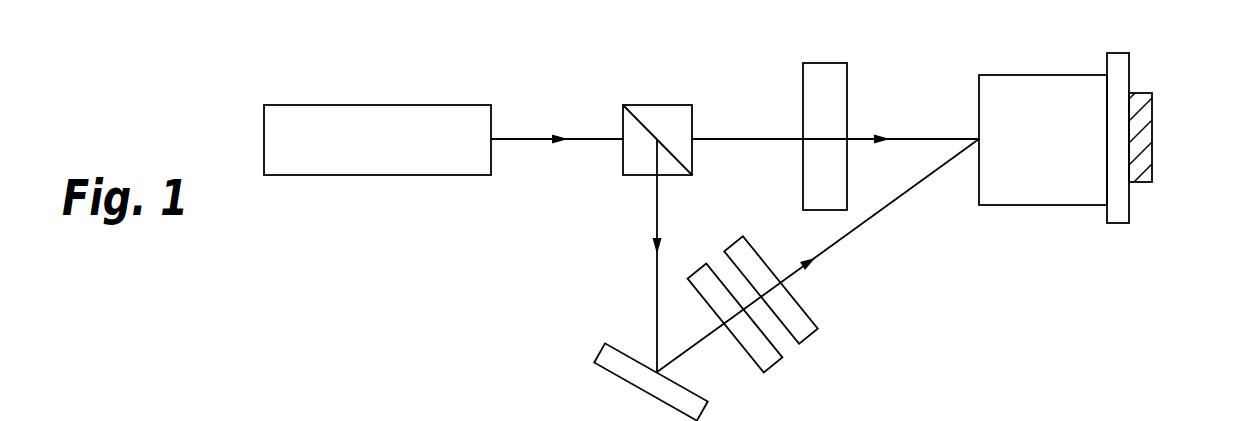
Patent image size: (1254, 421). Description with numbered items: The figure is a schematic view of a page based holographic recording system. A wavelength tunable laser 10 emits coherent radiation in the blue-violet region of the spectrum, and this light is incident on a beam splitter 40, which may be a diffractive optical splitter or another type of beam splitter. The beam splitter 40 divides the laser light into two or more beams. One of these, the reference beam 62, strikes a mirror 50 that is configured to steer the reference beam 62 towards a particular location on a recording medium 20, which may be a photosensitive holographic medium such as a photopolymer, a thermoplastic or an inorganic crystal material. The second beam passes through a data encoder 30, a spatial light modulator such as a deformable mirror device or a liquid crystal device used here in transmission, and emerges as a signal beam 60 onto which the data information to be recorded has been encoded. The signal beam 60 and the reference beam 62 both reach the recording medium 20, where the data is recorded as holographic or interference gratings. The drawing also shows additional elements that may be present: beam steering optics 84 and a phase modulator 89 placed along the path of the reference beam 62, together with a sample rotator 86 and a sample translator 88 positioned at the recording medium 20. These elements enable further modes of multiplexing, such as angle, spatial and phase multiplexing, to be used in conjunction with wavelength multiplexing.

The wavelength tunable laser 10 is at (355, 165).
The recording medium 20 is at (1030, 202).
The data encoder 30 is at (817, 85).
The beam splitter 40 is at (630, 165).
The mirror 50 is at (618, 366).
The signal beam 60 is at (935, 139).
The reference beam 62 is at (866, 222).
The beam steering optics 84 is at (770, 360).
The sample rotator 86 is at (1122, 68).
The sample translator 88 is at (1145, 115).
The phase modulator 89 is at (810, 330).